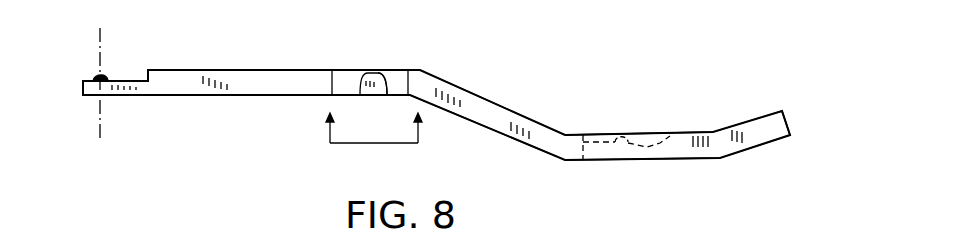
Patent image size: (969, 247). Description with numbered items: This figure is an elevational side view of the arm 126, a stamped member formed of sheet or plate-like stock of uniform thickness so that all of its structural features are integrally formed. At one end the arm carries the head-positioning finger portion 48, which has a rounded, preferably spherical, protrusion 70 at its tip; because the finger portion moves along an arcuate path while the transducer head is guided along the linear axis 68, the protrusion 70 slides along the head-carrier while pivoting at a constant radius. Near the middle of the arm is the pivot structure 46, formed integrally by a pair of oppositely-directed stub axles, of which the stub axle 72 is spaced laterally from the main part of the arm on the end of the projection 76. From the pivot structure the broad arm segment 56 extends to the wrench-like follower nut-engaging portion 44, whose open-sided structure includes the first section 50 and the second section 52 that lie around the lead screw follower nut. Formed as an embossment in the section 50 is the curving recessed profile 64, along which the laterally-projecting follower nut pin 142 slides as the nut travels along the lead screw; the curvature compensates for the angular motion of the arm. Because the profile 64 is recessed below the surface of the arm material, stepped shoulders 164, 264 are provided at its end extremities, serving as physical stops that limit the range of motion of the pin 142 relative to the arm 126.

The follower nut-engaging portion 44 is at (640, 161).
The pivot structure 46 is at (346, 104).
The head-positioning finger portion 48 is at (270, 73).
The first section 50 is at (676, 137).
The second section 52 is at (748, 142).
The broad arm segment 56 is at (481, 98).
The curving recessed profile 64 is at (652, 128).
The linear axis 68 is at (100, 134).
The rounded protrusion 70 is at (103, 78).
The stub axle 72 is at (356, 78).
The projection 76 is at (387, 77).
The arm 126 is at (283, 106).
The follower nut pin 142 is at (630, 136).
The stepped shoulder 164 is at (590, 134).
The stepped shoulder 264 is at (657, 160).